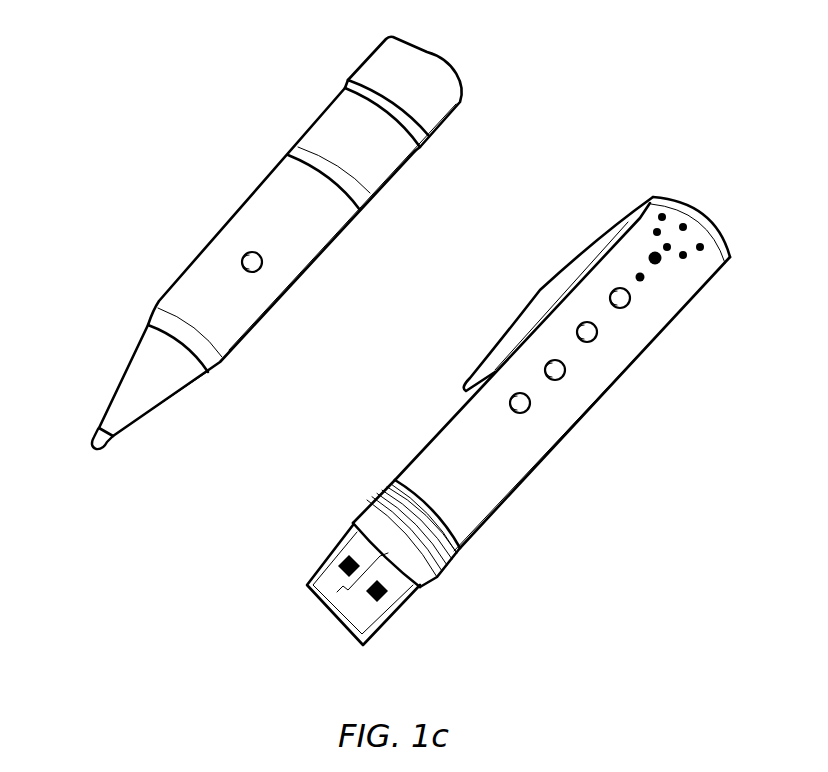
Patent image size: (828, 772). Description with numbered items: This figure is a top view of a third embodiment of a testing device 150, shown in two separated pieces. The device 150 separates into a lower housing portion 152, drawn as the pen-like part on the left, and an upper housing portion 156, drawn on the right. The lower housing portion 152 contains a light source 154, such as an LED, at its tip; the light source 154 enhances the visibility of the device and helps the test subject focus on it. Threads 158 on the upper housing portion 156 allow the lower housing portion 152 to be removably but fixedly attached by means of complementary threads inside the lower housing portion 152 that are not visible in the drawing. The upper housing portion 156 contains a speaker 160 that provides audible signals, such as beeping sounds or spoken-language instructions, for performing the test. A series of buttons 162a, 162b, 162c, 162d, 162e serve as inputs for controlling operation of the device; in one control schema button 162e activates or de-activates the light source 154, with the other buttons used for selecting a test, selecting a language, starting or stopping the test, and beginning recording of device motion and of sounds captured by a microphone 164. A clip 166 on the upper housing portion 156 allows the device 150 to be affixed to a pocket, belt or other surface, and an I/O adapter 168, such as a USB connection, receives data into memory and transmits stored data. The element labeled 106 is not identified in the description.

The device 150 is at (228, 141).
The lower housing portion 152 is at (432, 52).
The light source 154 is at (90, 446).
The upper housing portion 156 is at (672, 197).
The threads 158 is at (367, 508).
The speaker 160 is at (688, 227).
The microphone 106 is at (661, 261).
The microphone 164 is at (646, 279).
The clip 166 is at (616, 221).
The I/O adapter 168 is at (328, 611).
The button 162a is at (630, 303).
The button 162b is at (597, 338).
The button 162c is at (565, 376).
The button 162d is at (530, 409).
The button 162e is at (262, 266).